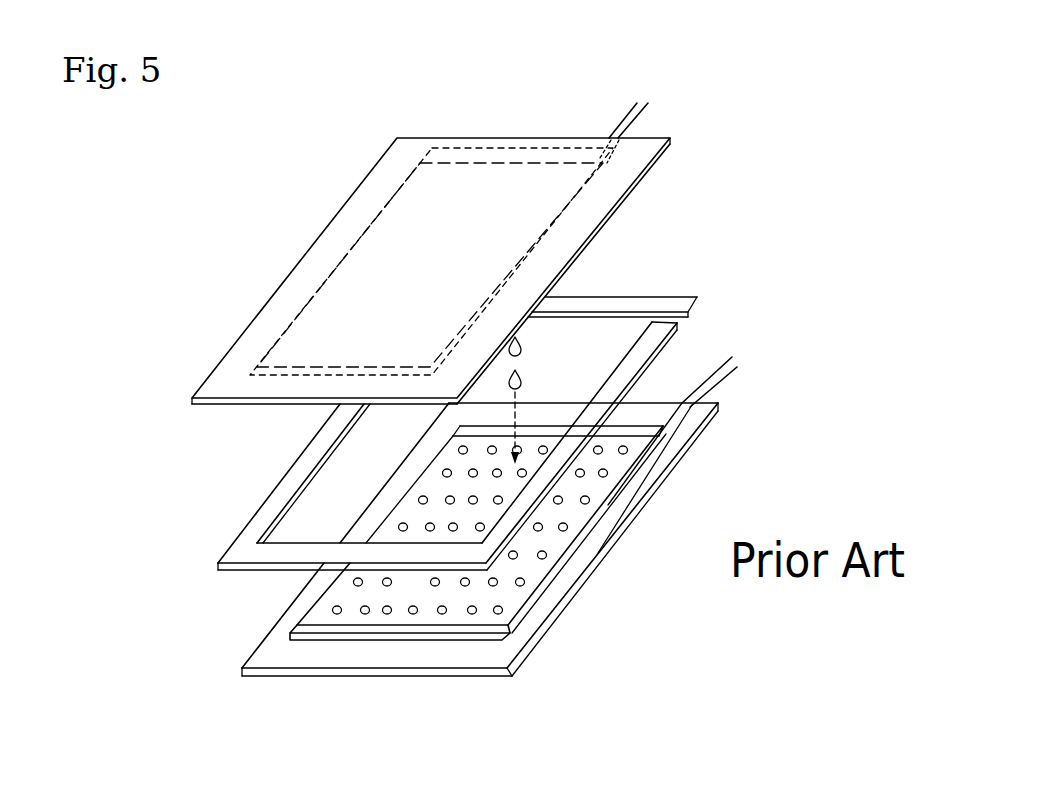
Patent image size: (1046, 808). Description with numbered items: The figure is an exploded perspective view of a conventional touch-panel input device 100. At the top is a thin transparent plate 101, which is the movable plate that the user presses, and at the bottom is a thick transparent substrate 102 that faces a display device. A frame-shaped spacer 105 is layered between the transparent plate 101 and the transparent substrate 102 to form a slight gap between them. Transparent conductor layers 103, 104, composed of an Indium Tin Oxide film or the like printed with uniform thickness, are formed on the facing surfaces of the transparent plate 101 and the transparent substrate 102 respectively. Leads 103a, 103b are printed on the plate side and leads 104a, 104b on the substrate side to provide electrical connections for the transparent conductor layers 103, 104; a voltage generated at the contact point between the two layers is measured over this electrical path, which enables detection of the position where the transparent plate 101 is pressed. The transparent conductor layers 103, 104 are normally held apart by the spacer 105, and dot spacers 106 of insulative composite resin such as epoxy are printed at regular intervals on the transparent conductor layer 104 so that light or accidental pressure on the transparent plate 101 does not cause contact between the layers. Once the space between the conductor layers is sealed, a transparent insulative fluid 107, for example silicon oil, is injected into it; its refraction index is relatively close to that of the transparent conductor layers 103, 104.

The touch-panel input device 100 is at (311, 164).
The transparent plate 101 is at (332, 240).
The transparent substrate 102 is at (484, 655).
The transparent conductor layer 103 is at (346, 318).
The lead 103a is at (621, 121).
The lead 103b is at (643, 112).
The transparent conductor layer 104 is at (433, 598).
The lead 104a is at (732, 357).
The lead 104b is at (735, 368).
The frame-shaped spacer 105 is at (634, 297).
The dot spacers 106 is at (502, 609).
The transparent insulative fluid 107 is at (527, 352).